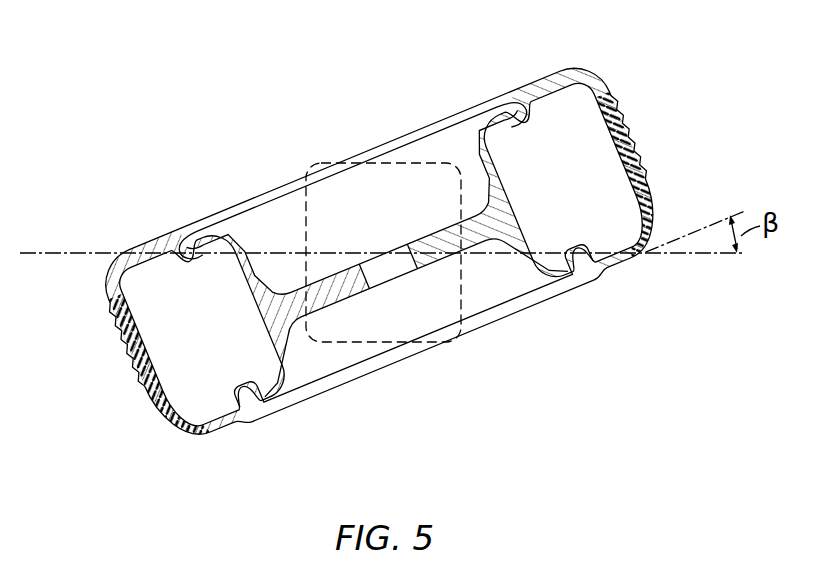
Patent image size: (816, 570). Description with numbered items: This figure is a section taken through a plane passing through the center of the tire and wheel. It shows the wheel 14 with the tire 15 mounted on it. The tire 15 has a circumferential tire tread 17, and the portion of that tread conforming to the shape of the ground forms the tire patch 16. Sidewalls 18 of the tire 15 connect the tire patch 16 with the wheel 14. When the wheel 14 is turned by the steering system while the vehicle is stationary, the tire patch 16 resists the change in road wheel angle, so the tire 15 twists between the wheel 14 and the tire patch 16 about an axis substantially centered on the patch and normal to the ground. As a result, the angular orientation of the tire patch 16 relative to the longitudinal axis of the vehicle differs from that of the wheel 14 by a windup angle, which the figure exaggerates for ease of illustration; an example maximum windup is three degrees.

The wheel 14 is at (256, 311).
The tire 15 is at (108, 311).
The tire patch 16 is at (300, 212).
The circumferential tire tread 17 is at (157, 404).
The sidewall 18 is at (540, 107).